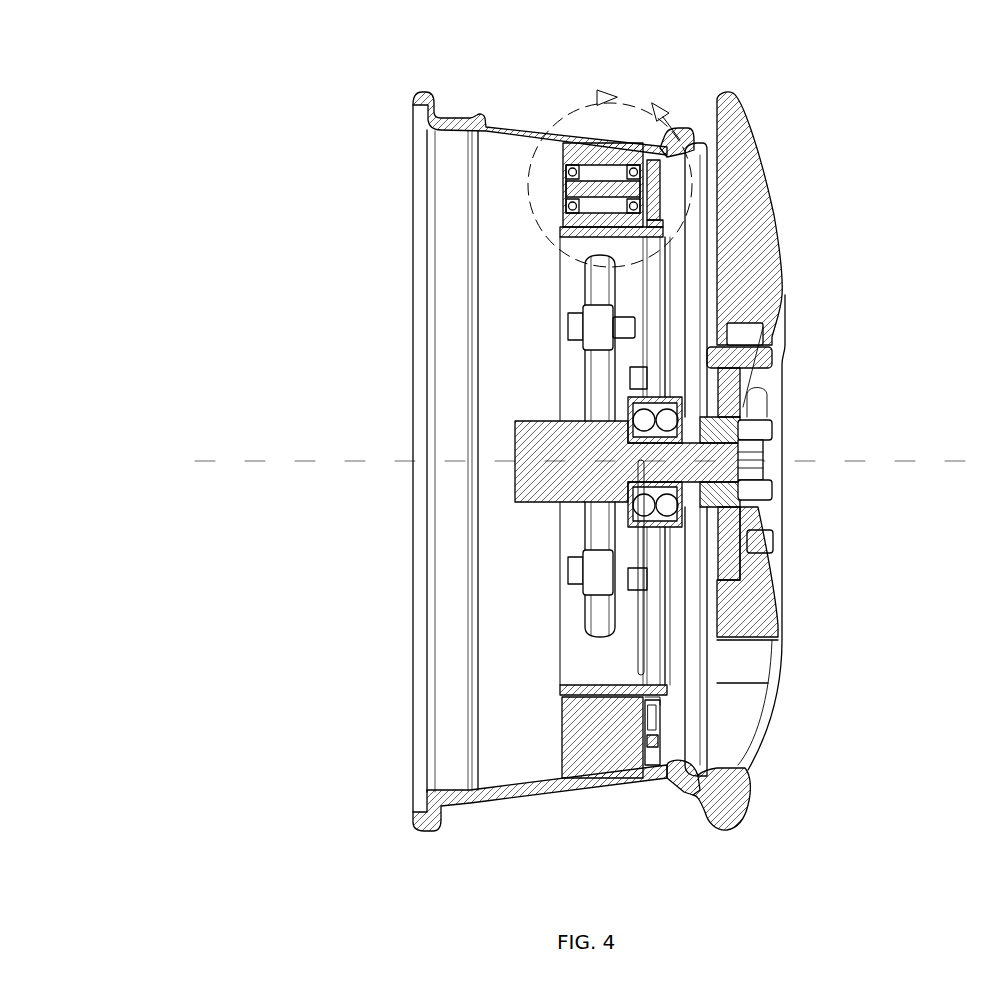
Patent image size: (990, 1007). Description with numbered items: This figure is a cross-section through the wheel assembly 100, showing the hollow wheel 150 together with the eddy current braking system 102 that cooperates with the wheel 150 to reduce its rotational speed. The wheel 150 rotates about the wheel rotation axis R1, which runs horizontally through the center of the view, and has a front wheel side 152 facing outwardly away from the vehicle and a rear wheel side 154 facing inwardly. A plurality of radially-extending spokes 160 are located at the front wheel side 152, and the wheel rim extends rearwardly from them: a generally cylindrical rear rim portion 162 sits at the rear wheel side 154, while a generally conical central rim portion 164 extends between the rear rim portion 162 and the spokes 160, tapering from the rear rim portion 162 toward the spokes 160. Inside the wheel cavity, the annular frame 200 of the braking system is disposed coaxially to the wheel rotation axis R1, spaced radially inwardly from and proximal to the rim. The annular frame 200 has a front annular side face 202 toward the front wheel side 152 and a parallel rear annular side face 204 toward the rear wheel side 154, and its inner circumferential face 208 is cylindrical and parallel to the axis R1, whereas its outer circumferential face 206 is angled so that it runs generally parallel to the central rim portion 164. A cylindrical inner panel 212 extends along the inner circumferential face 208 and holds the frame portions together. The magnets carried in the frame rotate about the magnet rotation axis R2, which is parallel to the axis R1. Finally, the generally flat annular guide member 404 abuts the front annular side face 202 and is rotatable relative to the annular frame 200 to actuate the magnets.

The wheel assembly 100 is at (255, 152).
The eddy current braking system 102 is at (507, 728).
The wheel 150 is at (812, 523).
The front wheel side 152 is at (817, 155).
The rear wheel side 154 is at (237, 260).
The spokes 160 is at (795, 320).
The rear rim portion 162 is at (453, 133).
The central rim portion 164 is at (513, 147).
The annular frame 200 is at (563, 748).
The front annular side face 202 is at (645, 750).
The rear annular side face 204 is at (560, 158).
The outer circumferential face 206 is at (589, 148).
The inner circumferential face 208 is at (590, 238).
The cylindrical inner panel 212 is at (600, 683).
The annular guide member 404 is at (660, 722).
The wheel rotation axis R1 is at (911, 458).
The magnet rotation axis R2 is at (785, 192).